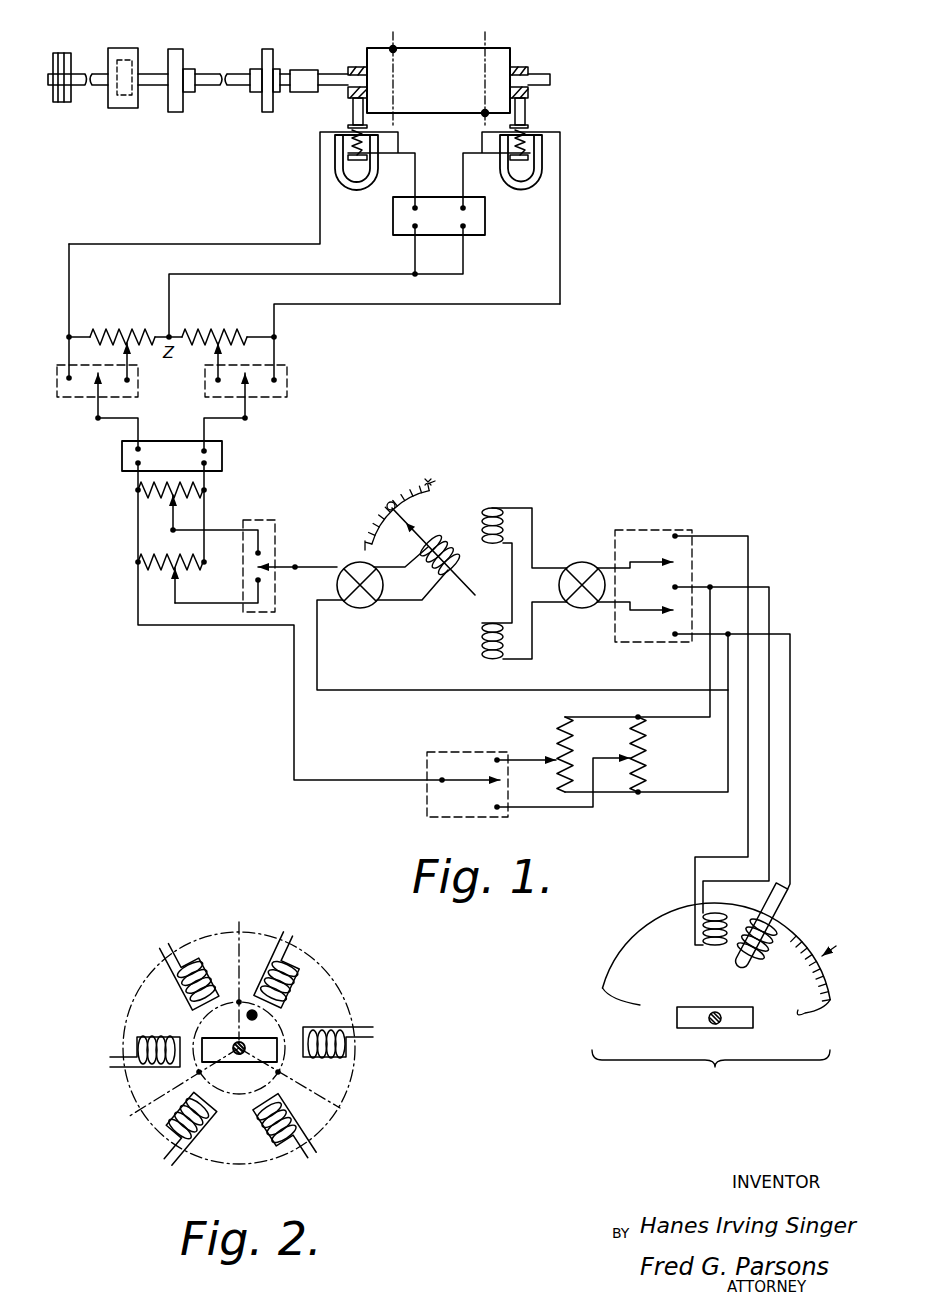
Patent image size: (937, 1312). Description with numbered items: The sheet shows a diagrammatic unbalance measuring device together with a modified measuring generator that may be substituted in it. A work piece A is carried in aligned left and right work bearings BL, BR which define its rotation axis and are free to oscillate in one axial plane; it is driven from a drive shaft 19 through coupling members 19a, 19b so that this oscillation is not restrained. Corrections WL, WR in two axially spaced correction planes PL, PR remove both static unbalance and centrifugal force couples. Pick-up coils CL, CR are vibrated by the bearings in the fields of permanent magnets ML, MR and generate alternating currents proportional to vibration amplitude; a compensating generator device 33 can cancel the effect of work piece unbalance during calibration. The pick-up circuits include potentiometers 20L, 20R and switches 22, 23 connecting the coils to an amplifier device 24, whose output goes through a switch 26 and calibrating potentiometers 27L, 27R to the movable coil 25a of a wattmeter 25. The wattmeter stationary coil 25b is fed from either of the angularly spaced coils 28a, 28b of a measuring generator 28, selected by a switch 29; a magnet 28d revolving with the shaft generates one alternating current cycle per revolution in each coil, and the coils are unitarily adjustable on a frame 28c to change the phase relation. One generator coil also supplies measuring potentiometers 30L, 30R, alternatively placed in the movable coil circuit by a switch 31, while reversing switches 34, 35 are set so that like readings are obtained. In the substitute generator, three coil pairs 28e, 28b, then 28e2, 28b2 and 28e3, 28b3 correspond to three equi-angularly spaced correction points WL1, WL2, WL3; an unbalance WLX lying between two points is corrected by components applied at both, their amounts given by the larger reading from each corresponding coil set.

In FIG. 1, the drive shaft 19 is at (98, 74).
In FIG. 1, the measuring generator 28 is at (120, 50).
In FIG. 1, the coupling member 19a is at (177, 52).
In FIG. 1, the coupling member 19b is at (268, 55).
In FIG. 1, the magnet 28d is at (121, 97).
In FIG. 2, the magnet 28d is at (222, 1037).
In FIG. 1, the work piece A is at (427, 100).
In FIG. 2, the work piece A is at (282, 1022).
In FIG. 1, the left correction plane PL is at (388, 72).
In FIG. 1, the right correction plane PR is at (486, 72).
In FIG. 1, the left correction WL is at (395, 51).
In FIG. 1, the right correction WR is at (484, 111).
In FIG. 1, the left work bearing BL is at (356, 66).
In FIG. 1, the right work bearing BR is at (524, 67).
In FIG. 1, the left pick-up coil CL is at (352, 125).
In FIG. 1, the right pick-up coil CR is at (525, 126).
In FIG. 1, the permanent magnet ML is at (352, 186).
In FIG. 1, the permanent magnet MR is at (524, 186).
In FIG. 1, the compensating generator device 33 is at (487, 236).
In FIG. 1, the potentiometer 20L is at (128, 323).
In FIG. 1, the potentiometer 20R is at (228, 323).
In FIG. 1, the switch 22 is at (78, 398).
In FIG. 1, the switch 23 is at (282, 398).
In FIG. 1, the amplifier device 24 is at (122, 462).
In FIG. 1, the calibrating potentiometer 27L is at (148, 487).
In FIG. 1, the calibrating potentiometer 27R is at (138, 561).
In FIG. 1, the switch 26 is at (264, 613).
In FIG. 1, the wattmeter 25 is at (456, 554).
In FIG. 1, the movable coil 25a is at (446, 549).
In FIG. 1, the stationary coil 25b is at (487, 612).
In FIG. 1, the reversing switch 34 is at (365, 608).
In FIG. 1, the reversing switch 35 is at (581, 562).
In FIG. 1, the switch 29 is at (624, 643).
In FIG. 1, the measuring potentiometer 30L is at (560, 750).
In FIG. 1, the measuring potentiometer 30R is at (640, 750).
In FIG. 1, the switch 31 is at (428, 798).
In FIG. 1, the generator coil 28a is at (703, 921).
In FIG. 1, the generator coil 28b is at (768, 948).
In FIG. 2, the generator coil 28b is at (290, 962).
In FIG. 1, the frame 28c is at (820, 1003).
In FIG. 2, the correction point WL1 is at (241, 1000).
In FIG. 2, the unbalance WLX is at (257, 1013).
In FIG. 2, the correction point WL2 is at (281, 1075).
In FIG. 2, the correction point WL3 is at (197, 1076).
In FIG. 2, the measuring coil 28e is at (175, 982).
In FIG. 2, the measuring coil 28e2 is at (335, 1062).
In FIG. 2, the measuring coil 28e3 is at (180, 1160).
In FIG. 2, the measuring coil 28b2 is at (279, 1138).
In FIG. 2, the measuring coil 28b3 is at (138, 1046).